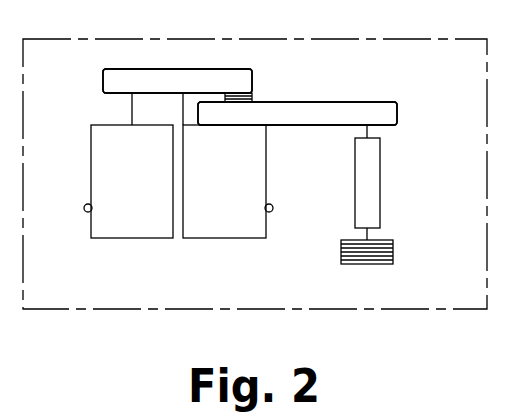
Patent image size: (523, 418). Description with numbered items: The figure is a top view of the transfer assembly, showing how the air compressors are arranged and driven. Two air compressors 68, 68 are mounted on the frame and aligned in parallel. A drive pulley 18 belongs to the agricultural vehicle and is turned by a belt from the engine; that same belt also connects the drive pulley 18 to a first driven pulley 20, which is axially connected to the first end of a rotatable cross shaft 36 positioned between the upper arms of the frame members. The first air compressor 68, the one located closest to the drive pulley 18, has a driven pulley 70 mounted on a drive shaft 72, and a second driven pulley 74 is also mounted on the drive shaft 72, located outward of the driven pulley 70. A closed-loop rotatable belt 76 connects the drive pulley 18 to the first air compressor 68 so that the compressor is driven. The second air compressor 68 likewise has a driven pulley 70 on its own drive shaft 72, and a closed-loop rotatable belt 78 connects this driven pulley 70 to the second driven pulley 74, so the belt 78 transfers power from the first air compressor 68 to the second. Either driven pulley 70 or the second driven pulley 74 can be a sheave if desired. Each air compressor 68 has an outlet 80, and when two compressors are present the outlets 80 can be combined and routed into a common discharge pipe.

The drive pulley 18 is at (392, 101).
The first driven pulley 20 is at (393, 252).
The rotatable cross shaft 36 is at (381, 180).
The air compressor 68 is at (90, 177).
The driven pulley 70 is at (150, 68).
The drive shaft 72 is at (137, 108).
The second driven pulley 74 is at (245, 68).
The rotatable belt 76 is at (315, 101).
The rotatable belt 78 is at (188, 68).
The outlet 80 is at (84, 212).